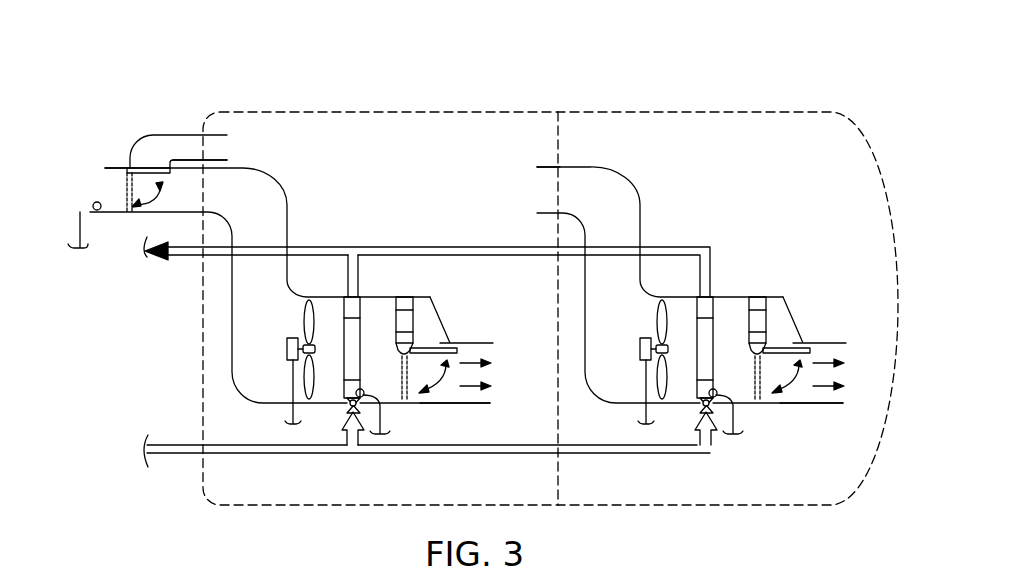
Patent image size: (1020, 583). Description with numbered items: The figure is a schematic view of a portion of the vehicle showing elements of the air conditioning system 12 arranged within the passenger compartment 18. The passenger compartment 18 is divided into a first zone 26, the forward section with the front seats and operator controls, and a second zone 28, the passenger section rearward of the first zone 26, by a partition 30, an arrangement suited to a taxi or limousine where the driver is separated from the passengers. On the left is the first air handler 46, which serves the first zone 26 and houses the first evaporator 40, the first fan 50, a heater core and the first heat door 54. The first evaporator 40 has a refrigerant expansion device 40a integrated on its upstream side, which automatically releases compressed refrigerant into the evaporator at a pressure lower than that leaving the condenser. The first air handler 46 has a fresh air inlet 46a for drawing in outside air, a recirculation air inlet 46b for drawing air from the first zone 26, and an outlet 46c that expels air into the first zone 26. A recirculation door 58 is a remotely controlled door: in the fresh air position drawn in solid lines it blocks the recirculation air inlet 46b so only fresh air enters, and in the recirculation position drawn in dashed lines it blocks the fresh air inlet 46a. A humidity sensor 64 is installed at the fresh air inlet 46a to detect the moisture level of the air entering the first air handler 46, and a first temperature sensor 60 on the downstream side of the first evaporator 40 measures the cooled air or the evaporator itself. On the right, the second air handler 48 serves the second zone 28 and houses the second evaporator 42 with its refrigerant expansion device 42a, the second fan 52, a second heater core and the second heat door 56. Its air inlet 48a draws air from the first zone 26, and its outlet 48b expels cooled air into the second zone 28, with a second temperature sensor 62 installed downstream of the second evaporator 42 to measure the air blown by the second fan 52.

The air conditioning system 12 is at (448, 236).
The passenger compartment 18 is at (473, 100).
The first zone 26 is at (383, 148).
The second zone 28 is at (725, 147).
The partition 30 is at (558, 133).
The first evaporator 40 is at (361, 337).
The refrigerant expansion device 40a is at (347, 402).
The second evaporator 42 is at (714, 337).
The refrigerant expansion device 42a is at (700, 402).
The first air handler 46 is at (287, 205).
The fresh air inlet 46a is at (107, 168).
The recirculation air inlet 46b is at (227, 136).
The outlet 46c is at (477, 403).
The second air handler 48 is at (640, 203).
The air inlet 48a is at (548, 168).
The outlet 48b is at (830, 403).
The first fan 50 is at (287, 348).
The second fan 52 is at (640, 348).
The first heat door 54 is at (427, 343).
The second heat door 56 is at (780, 343).
The recirculation door 58 is at (150, 168).
The first temperature sensor 60 is at (364, 391).
The second temperature sensor 62 is at (717, 391).
The humidity sensor 64 is at (94, 203).